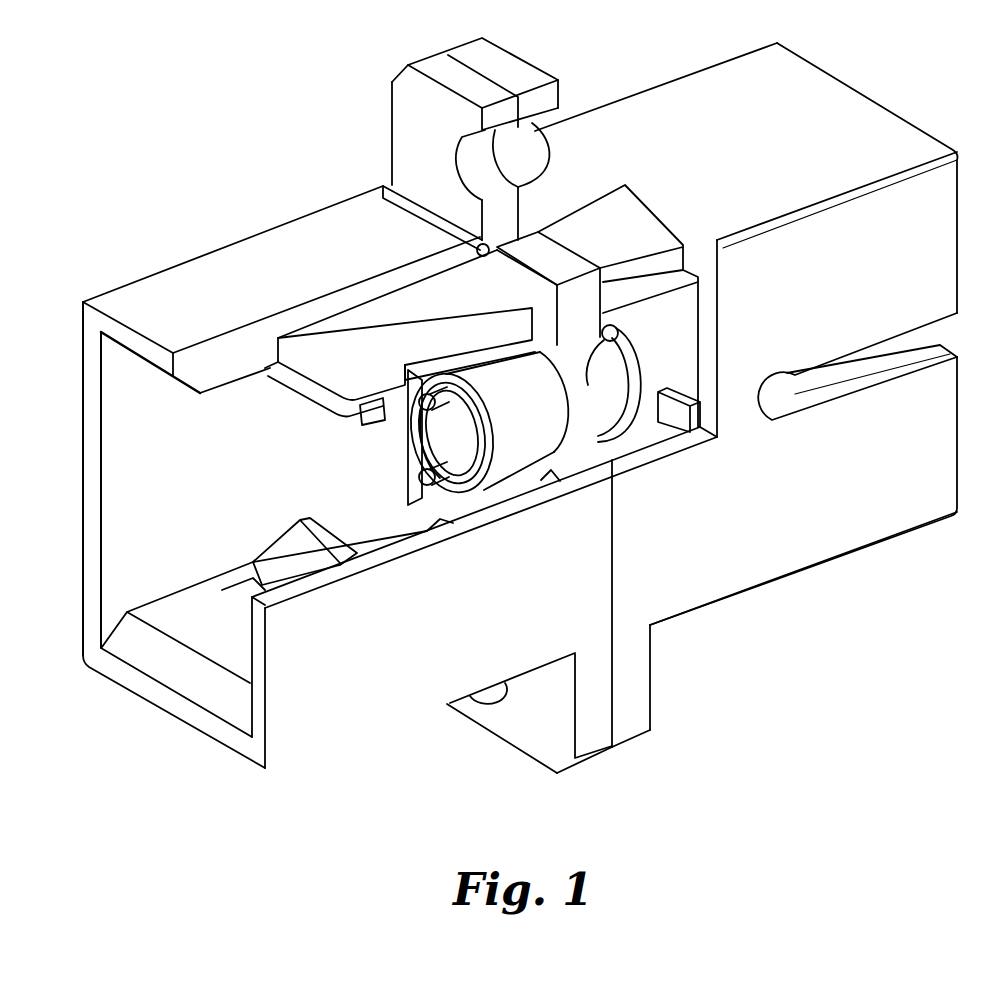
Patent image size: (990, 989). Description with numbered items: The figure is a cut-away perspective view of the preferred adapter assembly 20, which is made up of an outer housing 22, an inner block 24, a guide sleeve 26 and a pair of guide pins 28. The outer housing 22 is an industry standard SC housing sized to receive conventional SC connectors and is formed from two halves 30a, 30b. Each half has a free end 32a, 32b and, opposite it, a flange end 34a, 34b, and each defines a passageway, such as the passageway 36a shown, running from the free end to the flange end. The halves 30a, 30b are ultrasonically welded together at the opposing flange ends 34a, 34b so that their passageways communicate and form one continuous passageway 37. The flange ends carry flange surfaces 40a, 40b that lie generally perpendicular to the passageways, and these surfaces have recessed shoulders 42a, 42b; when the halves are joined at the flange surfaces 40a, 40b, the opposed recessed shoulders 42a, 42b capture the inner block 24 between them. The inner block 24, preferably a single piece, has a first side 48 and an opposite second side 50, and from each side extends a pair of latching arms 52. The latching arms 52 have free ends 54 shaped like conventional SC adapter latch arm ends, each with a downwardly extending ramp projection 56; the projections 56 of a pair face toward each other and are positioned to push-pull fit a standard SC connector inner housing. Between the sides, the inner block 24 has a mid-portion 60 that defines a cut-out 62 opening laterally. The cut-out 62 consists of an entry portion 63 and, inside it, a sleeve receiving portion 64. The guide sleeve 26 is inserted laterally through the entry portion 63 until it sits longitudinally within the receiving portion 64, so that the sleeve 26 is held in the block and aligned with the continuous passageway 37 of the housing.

The adapter assembly 20 is at (240, 846).
The outer housing 22 is at (822, 548).
The inner block 24 is at (538, 288).
The guide sleeve 26 is at (615, 472).
The guide pins 28 is at (423, 405).
The housing half 30a is at (407, 690).
The housing half 30b is at (725, 588).
The free end 32a is at (300, 745).
The free end 32b is at (926, 508).
The flange end 34a is at (563, 773).
The flange end 34b is at (645, 688).
The passageway 36a is at (148, 538).
The continuous passageway 37 is at (122, 447).
The flange surface 40a is at (617, 707).
The flange surface 40b is at (613, 698).
The recessed shoulder 42a is at (468, 228).
The recessed shoulder 42b is at (552, 231).
The first side 48 is at (517, 285).
The second side 50 is at (600, 268).
The latching arms 52 is at (308, 363).
The free ends 54 is at (310, 390).
The ramp projection 56 is at (372, 422).
The mid-portion 60 is at (603, 280).
The cut-out 62 is at (553, 392).
The entry portion 63 is at (590, 395).
The sleeve receiving portion 64 is at (505, 362).